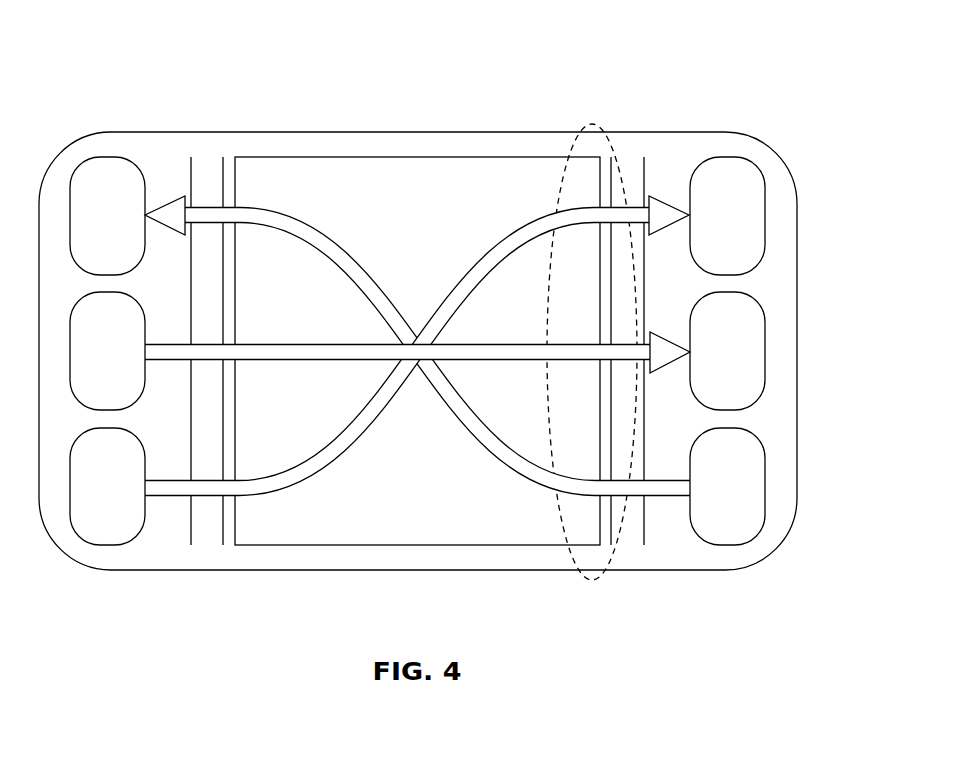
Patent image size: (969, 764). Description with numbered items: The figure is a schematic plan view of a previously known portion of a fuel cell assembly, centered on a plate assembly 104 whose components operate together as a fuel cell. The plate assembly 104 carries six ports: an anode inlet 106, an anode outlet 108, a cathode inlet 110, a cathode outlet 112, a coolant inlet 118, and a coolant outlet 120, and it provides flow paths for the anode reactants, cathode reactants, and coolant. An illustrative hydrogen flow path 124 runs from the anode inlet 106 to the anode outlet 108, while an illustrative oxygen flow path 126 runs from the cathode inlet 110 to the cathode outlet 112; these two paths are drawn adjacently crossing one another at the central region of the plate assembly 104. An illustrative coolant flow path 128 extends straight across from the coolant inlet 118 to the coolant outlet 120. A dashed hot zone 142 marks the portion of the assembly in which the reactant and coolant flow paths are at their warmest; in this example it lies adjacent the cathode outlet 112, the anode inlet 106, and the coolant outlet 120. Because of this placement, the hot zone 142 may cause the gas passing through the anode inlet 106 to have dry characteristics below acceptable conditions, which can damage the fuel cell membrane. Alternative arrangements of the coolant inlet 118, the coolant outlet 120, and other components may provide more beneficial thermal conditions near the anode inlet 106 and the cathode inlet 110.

The plate assembly 104 is at (682, 118).
The anode inlet 106 is at (705, 501).
The anode outlet 108 is at (85, 229).
The cathode inlet 110 is at (85, 501).
The cathode outlet 112 is at (705, 229).
The coolant inlet 118 is at (85, 365).
The coolant outlet 120 is at (705, 365).
The hydrogen flow path 124 is at (285, 212).
The oxygen flow path 126 is at (515, 238).
The coolant flow path 128 is at (267, 360).
The hot zone 142 is at (594, 125).